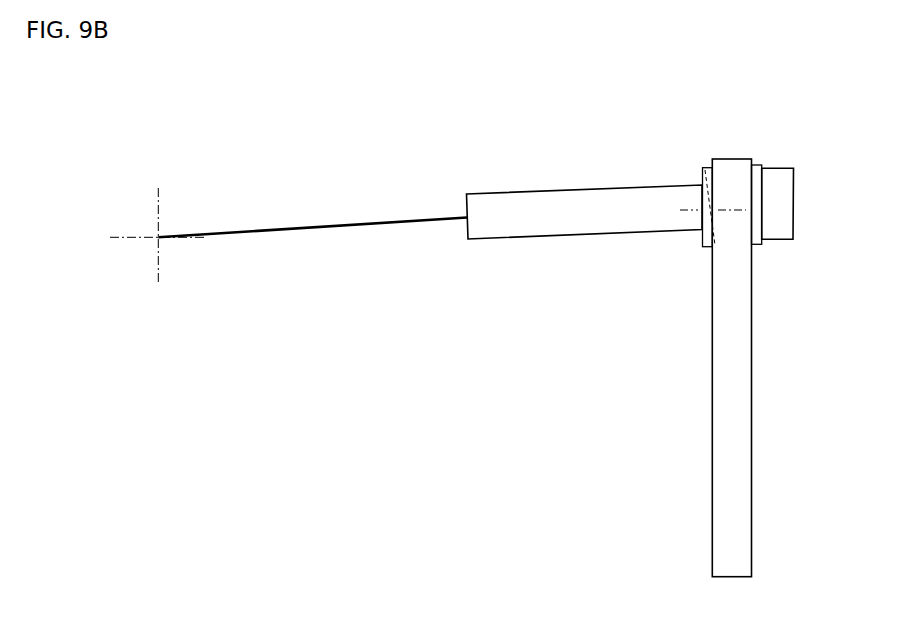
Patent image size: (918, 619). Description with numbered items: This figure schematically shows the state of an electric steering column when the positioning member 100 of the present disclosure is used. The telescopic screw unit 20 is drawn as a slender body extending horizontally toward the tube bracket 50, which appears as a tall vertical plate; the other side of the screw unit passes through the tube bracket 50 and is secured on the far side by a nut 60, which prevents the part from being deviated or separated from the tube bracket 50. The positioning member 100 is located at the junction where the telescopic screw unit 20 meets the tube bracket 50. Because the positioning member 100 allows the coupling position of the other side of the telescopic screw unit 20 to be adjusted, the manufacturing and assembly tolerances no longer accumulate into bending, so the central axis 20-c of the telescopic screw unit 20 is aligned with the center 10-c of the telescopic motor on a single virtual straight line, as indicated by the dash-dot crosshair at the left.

The center of the telescopic motor 10-c is at (158, 237).
The telescopic screw unit 20 is at (492, 212).
The central axis of the telescopic screw unit 20-c is at (712, 210).
The tube bracket 50 is at (723, 430).
The nut 60 is at (784, 202).
The positioning member 100 is at (760, 157).